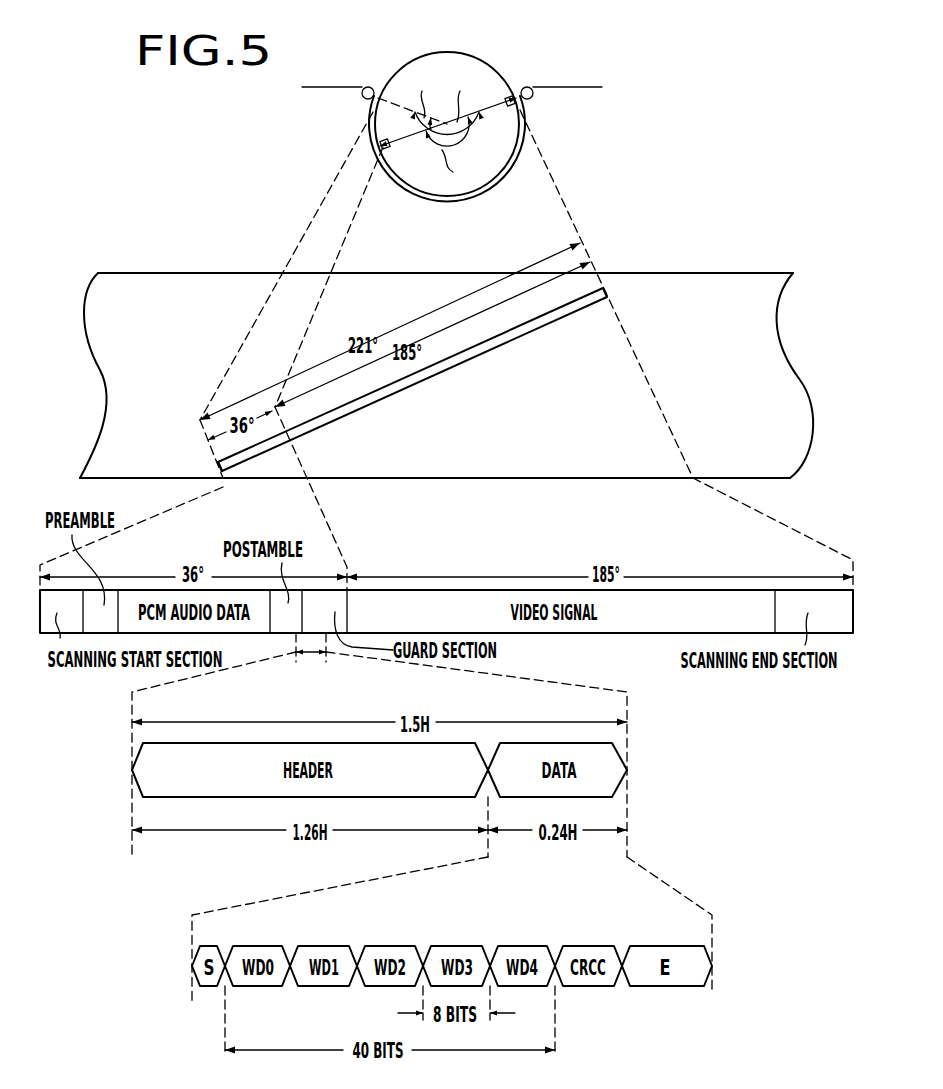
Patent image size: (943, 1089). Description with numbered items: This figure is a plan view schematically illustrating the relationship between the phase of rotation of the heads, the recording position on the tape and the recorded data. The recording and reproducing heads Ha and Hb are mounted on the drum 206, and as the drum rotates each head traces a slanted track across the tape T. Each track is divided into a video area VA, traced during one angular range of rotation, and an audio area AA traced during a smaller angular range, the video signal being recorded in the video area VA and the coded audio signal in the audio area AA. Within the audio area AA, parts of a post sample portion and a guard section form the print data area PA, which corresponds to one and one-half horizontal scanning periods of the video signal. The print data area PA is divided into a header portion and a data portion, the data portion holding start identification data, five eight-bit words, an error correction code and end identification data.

The drum 206 is at (492, 52).
The recording and reproducing head Ha is at (387, 158).
The recording and reproducing head Hb is at (513, 95).
The tape T is at (592, 89).
The video area VA is at (422, 378).
The audio area AA is at (256, 455).
The print data area PA is at (311, 660).